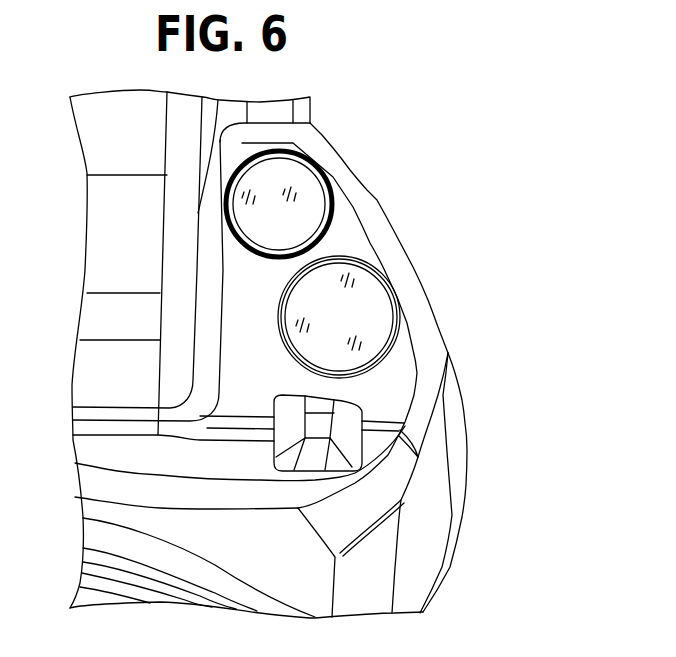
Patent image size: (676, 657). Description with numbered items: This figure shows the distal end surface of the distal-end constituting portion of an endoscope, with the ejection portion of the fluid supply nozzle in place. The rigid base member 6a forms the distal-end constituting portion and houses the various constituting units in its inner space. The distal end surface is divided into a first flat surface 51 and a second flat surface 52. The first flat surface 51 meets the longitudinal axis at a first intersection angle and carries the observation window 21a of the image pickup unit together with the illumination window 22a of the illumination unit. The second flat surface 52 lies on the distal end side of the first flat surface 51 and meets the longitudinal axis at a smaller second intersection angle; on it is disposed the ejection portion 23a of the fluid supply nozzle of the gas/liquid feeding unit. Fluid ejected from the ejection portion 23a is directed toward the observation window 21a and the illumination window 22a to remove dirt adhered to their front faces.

The base member 6a is at (396, 234).
The observation window 21a is at (363, 322).
The illumination window 22a is at (307, 193).
The ejection portion 23a is at (345, 416).
The first flat surface 51 is at (248, 323).
The second flat surface 52 is at (214, 467).